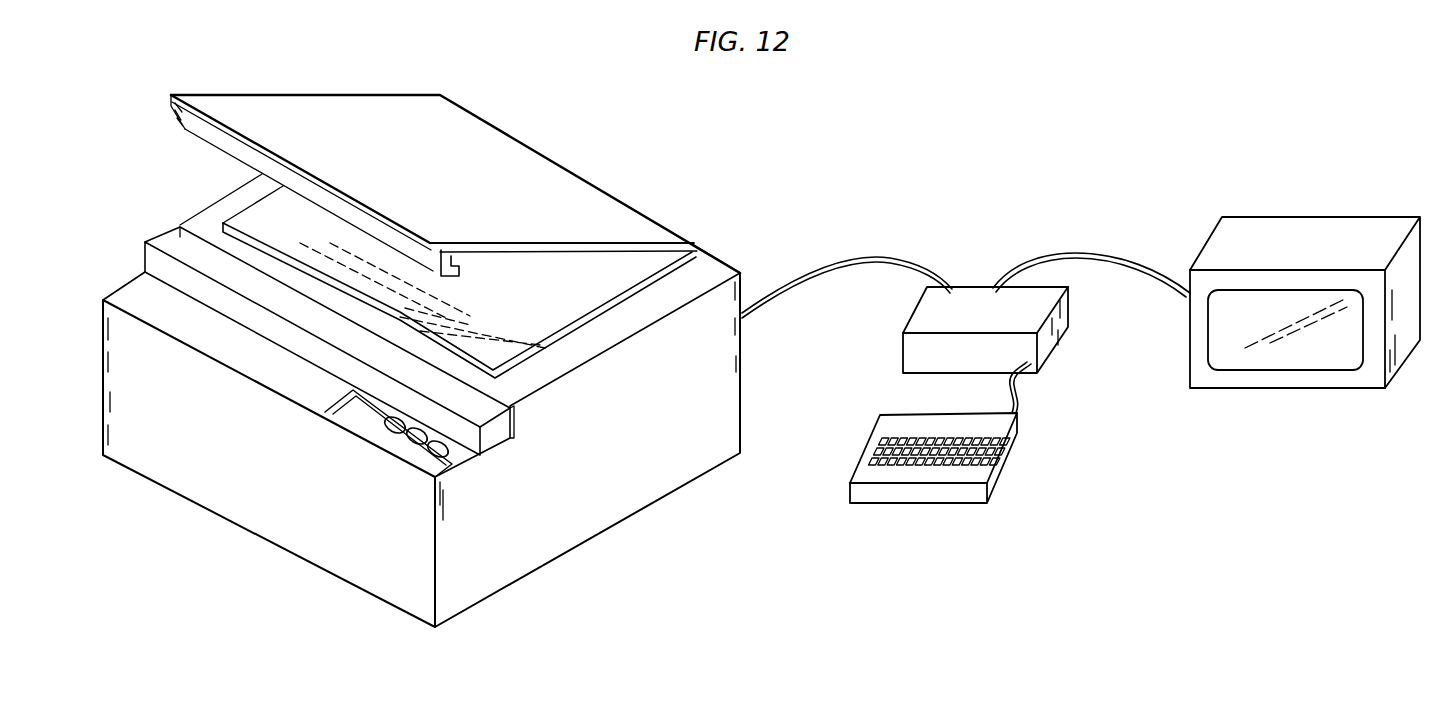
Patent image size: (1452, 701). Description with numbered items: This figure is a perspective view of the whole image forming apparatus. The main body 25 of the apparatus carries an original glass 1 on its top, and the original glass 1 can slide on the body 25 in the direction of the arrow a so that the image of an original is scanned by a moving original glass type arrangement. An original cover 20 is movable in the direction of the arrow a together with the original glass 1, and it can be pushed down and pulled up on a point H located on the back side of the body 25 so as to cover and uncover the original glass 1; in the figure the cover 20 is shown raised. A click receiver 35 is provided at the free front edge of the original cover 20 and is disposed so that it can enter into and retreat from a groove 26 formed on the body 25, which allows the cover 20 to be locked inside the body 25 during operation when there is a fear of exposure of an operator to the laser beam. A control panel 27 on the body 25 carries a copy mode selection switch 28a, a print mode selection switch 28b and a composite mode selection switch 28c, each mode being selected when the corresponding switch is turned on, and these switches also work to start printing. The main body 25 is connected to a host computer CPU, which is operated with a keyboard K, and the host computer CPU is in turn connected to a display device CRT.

The original glass 1 is at (572, 304).
The original cover 20 is at (573, 187).
The body 25 is at (584, 524).
The groove 26 is at (513, 428).
The control panel 27 is at (338, 398).
The copy mode selection switch 28a is at (383, 434).
The print mode selection switch 28b is at (390, 448).
The composite mode selection switch 28c is at (428, 466).
The click receiver 35 is at (370, 233).
The point H is at (698, 244).
The arrow a is at (588, 393).
The host computer CPU is at (985, 330).
The keyboard K is at (953, 503).
The display device CRT is at (1305, 302).